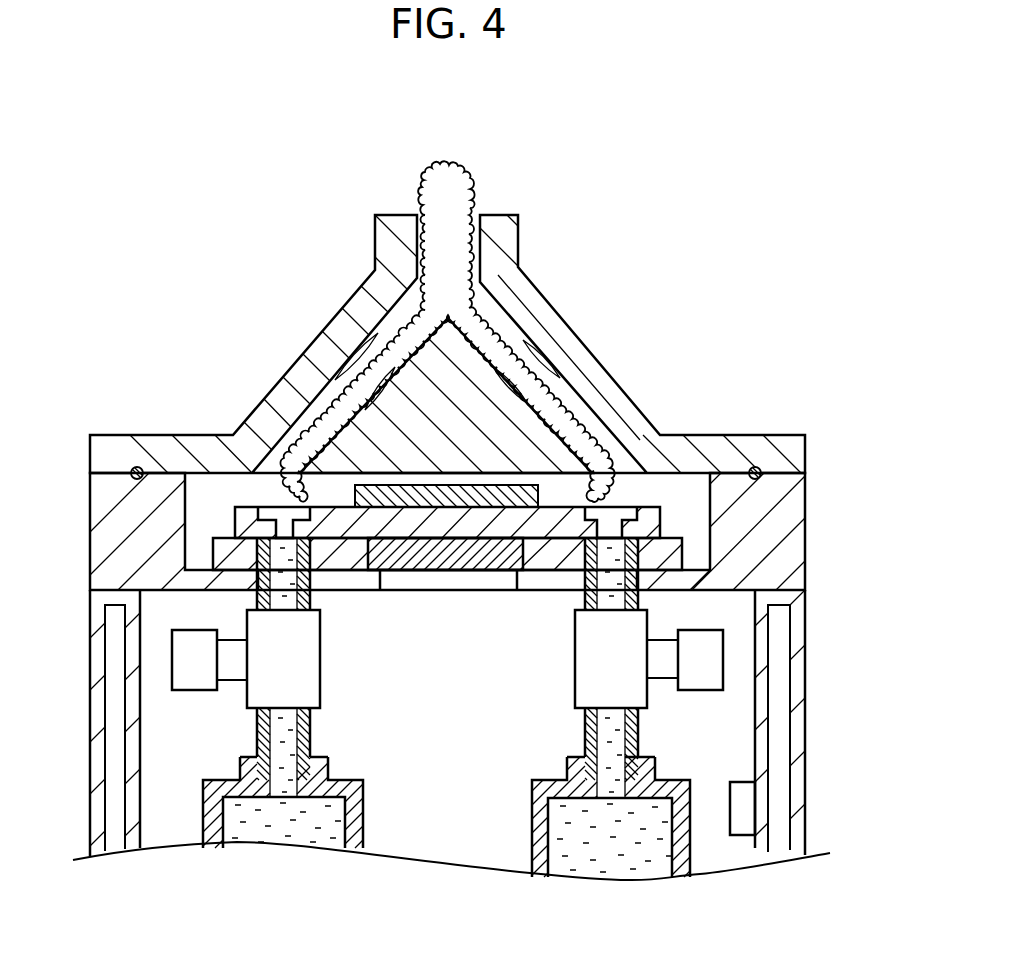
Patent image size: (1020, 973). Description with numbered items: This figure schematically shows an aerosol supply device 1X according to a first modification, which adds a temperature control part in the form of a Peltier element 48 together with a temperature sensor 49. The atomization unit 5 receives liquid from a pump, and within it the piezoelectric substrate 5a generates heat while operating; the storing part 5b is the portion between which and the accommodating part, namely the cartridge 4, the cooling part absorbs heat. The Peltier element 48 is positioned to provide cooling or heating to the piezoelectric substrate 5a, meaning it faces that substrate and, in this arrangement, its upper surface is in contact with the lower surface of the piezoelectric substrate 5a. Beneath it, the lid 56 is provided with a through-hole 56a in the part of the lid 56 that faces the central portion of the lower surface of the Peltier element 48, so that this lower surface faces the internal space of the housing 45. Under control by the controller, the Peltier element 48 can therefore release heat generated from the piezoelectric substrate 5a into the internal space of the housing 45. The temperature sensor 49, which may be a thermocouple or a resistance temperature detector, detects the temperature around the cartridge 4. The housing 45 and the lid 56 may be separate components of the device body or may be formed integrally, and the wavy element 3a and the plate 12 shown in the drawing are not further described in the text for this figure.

The aerosol supply device 1X is at (683, 202).
The fluid / film passing through hood 3a is at (472, 212).
The cartridge 4 is at (683, 835).
The atomization unit 5 is at (229, 494).
The piezoelectric substrate 5a is at (690, 488).
The storing part 5b is at (614, 482).
The base plate (12a) 12 is at (667, 558).
The housing 45 is at (797, 720).
The Peltier element 48 is at (457, 562).
The temperature sensor 49 is at (745, 812).
The lid 56 is at (780, 507).
The through-hole 56a is at (378, 578).